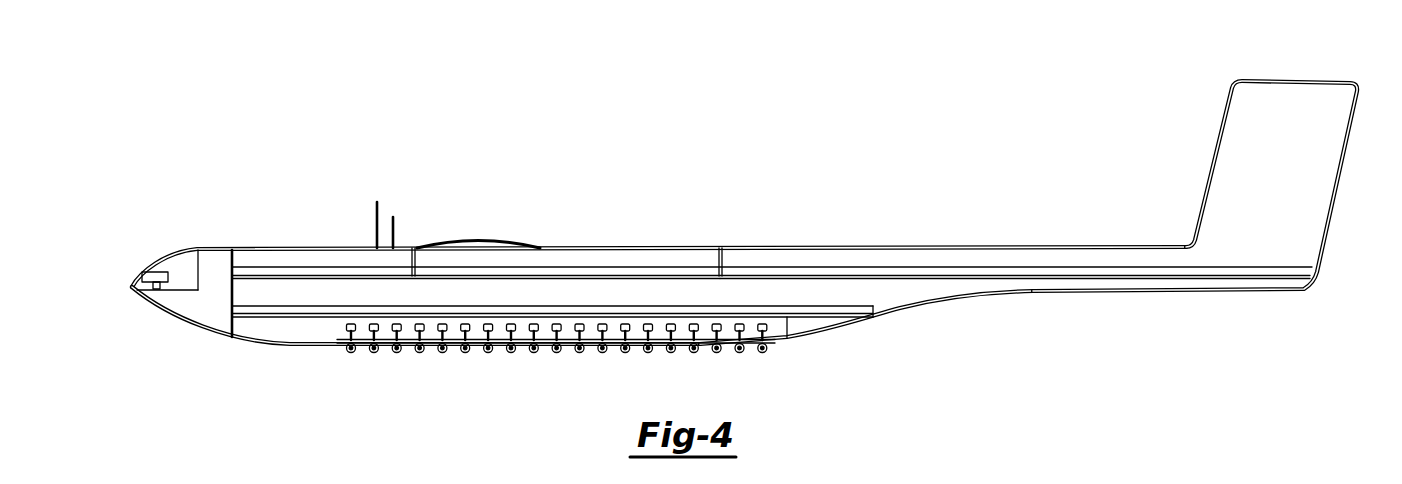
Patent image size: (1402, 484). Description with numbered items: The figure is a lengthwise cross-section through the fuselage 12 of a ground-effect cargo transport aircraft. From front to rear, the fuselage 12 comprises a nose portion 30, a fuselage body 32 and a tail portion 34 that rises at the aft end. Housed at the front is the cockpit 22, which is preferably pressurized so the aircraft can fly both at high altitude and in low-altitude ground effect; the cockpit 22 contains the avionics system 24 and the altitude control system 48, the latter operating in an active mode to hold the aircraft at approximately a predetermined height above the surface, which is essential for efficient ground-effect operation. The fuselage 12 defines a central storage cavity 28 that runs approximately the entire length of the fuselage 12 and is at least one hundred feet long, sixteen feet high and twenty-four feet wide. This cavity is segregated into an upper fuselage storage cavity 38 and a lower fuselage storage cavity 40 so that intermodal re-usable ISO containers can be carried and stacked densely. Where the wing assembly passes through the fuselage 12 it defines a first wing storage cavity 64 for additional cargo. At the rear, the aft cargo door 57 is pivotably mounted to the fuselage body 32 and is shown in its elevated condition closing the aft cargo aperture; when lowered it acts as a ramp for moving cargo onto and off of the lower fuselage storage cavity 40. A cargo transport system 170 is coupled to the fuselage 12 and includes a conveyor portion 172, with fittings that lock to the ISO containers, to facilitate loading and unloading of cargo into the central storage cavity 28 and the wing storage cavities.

The fuselage 12 is at (744, 244).
The cockpit 22 is at (179, 257).
The avionics system 24 is at (140, 283).
The central storage cavity 28 is at (665, 270).
The nose portion 30 is at (192, 337).
The fuselage body 32 is at (563, 246).
The tail portion 34 is at (1245, 215).
The upper fuselage storage cavity 38 is at (300, 265).
The lower fuselage storage cavity 40 is at (300, 297).
The altitude control system 48 is at (156, 290).
The aft cargo door 57 is at (870, 330).
The first wing storage cavity 64 is at (496, 262).
The cargo transport system 170 is at (907, 270).
The conveyor portion 172 is at (750, 310).